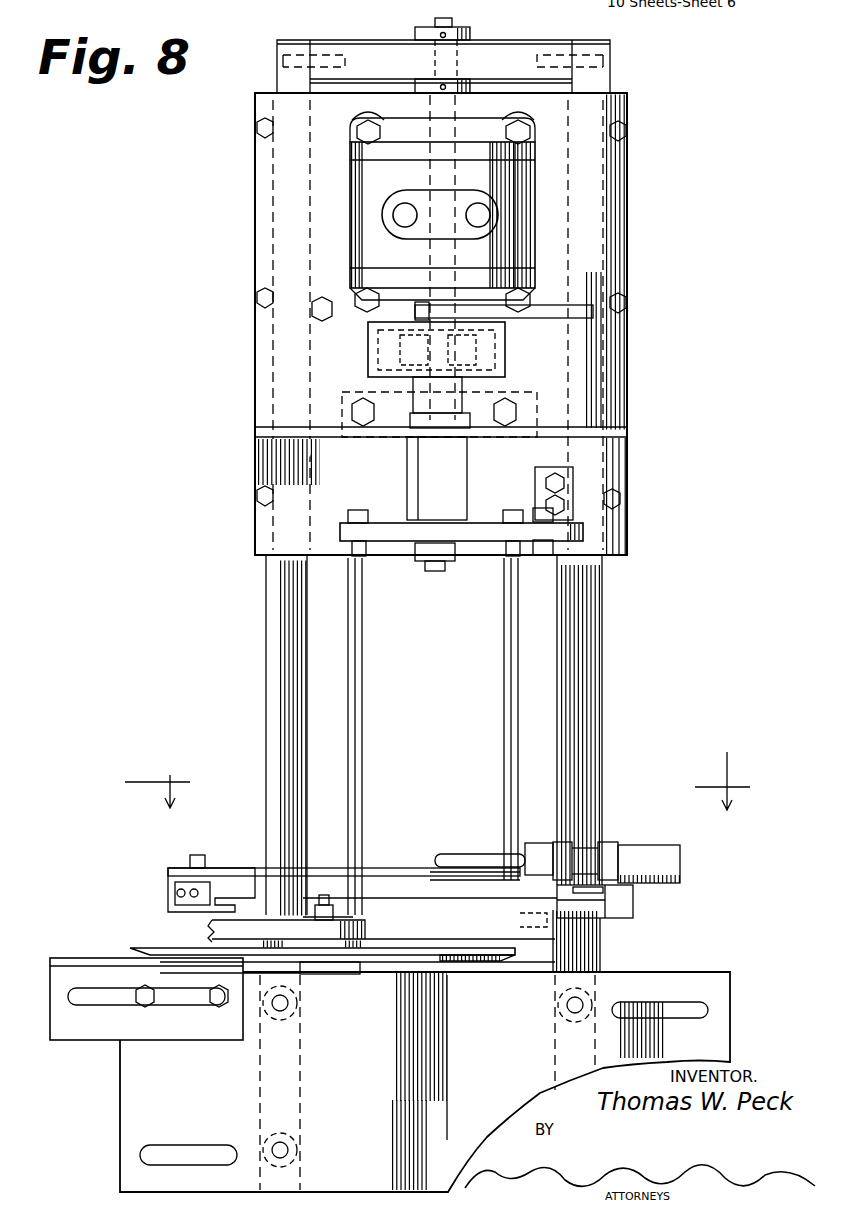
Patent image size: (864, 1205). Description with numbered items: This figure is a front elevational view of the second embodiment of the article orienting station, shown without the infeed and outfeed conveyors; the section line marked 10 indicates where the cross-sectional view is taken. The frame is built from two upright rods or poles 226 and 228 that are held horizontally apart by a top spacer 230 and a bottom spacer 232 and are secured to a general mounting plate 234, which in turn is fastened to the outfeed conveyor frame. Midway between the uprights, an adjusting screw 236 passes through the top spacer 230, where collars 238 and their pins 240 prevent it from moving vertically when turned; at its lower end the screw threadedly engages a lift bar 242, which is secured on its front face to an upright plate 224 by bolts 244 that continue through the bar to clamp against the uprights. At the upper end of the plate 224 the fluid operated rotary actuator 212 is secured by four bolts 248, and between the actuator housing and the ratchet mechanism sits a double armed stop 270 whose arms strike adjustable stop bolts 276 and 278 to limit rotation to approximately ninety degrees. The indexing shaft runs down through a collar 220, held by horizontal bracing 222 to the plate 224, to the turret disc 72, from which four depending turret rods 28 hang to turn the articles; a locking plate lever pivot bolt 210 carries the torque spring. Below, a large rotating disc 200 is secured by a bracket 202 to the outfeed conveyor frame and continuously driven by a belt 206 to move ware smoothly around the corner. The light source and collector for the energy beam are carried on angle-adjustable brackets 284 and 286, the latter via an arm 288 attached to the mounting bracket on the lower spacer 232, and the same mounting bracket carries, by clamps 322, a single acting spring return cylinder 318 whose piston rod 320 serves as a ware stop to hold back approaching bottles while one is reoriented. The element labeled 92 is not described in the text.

The cross-sectional view section line 10 is at (437, 797).
The depending turret rods 28 is at (503, 718).
The turret disc 72 is at (395, 556).
The bracket 92 is at (573, 488).
The disc 200 is at (148, 946).
The bracket 202 is at (68, 1042).
The belt 206 is at (212, 932).
The locking plate lever pivot bolt 210 is at (536, 558).
The rotary actuator 212 is at (340, 228).
The collar 220 is at (468, 498).
The horizontal bracing 222 is at (628, 425).
The upright plate 224 is at (628, 372).
The upright rod 226 is at (595, 698).
The upright rod 228 is at (268, 698).
The top spacer 230 is at (404, 57).
The bottom spacer 232 is at (368, 876).
The general mounting plate 234 is at (700, 974).
The adjusting screw 236 is at (452, 22).
The collars 238 is at (416, 80).
The pins 240 is at (446, 40).
The lift bar 242 is at (504, 398).
The bolts 244 is at (362, 428).
The bolts 248 is at (366, 118).
The double armed stop 270 is at (537, 330).
The stop bolt 276 is at (318, 296).
The stop bolt 278 is at (576, 304).
The bracket 284 is at (633, 905).
The bracket 286 is at (168, 894).
The arm 288 is at (243, 868).
The cylinder 318 is at (655, 857).
The piston rod 320 is at (482, 856).
The clamps 322 is at (600, 842).